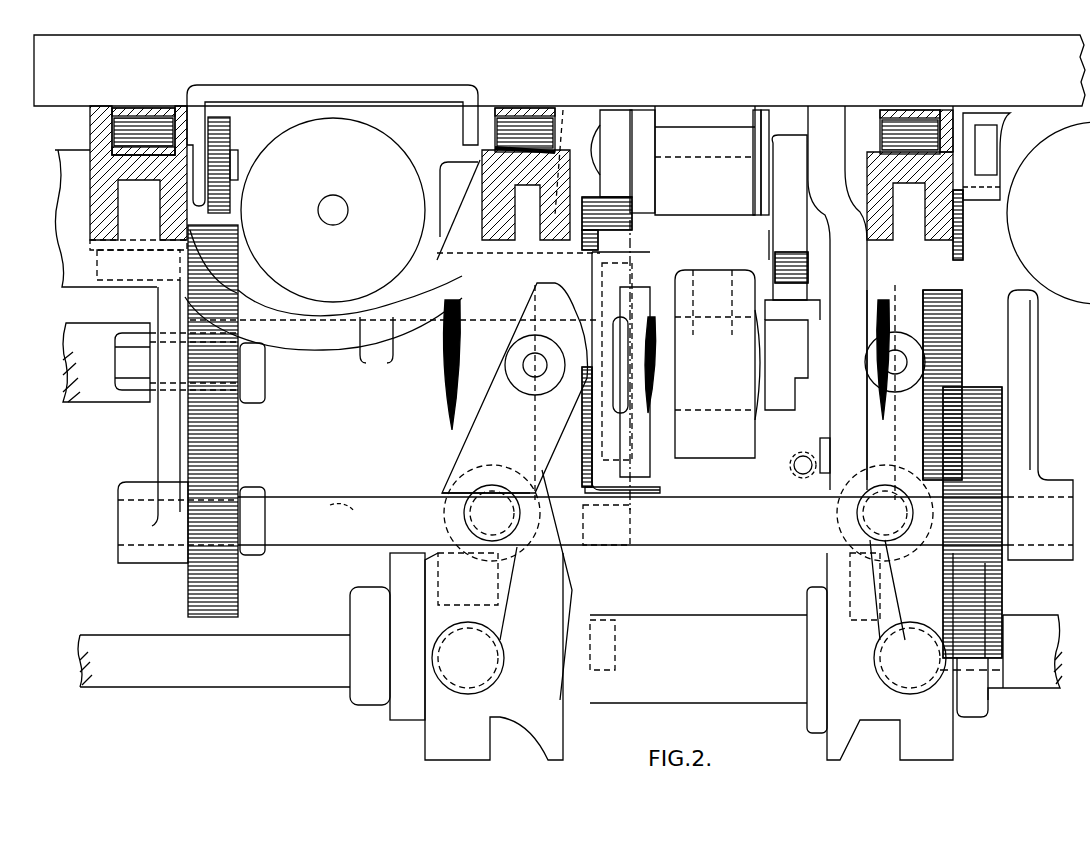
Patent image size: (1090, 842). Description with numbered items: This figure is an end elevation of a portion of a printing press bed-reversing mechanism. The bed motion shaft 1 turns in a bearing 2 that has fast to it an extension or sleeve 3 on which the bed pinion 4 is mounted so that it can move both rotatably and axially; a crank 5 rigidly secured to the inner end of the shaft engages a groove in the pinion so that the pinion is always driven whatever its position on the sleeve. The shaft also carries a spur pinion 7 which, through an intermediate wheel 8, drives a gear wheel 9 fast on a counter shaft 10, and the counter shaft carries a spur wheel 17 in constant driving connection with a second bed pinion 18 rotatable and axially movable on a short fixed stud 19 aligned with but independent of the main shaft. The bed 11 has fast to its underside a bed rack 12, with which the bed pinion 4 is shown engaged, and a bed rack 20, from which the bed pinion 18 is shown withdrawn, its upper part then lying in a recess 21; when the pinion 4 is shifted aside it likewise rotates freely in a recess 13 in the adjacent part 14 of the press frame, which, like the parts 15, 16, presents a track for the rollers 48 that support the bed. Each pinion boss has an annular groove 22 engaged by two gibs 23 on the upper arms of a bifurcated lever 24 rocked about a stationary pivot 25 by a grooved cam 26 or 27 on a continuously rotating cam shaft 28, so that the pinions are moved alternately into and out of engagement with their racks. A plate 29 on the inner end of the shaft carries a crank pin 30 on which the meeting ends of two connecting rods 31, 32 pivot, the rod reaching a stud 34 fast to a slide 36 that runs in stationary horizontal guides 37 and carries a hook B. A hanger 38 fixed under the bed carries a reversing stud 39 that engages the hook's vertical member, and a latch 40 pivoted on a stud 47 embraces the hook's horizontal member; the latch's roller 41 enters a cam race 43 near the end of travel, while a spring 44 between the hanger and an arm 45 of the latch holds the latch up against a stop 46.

The bed motion shaft 1 is at (332, 384).
The bearing 2 is at (385, 450).
The extension or sleeve 3 is at (475, 415).
The bed pinion 4 is at (640, 490).
The crank 5 is at (607, 493).
The spur pinion 7 is at (236, 250).
The intermediate wheel 8 is at (222, 412).
The gear wheel 9 is at (222, 474).
The counter shaft 10 is at (328, 532).
The bed 11 is at (60, 78).
The bed rack 12 is at (600, 190).
The recess 13 is at (556, 200).
The part of the press frame 14 is at (518, 130).
The part of the press frame 15 is at (103, 190).
The part of the press frame 16 is at (880, 200).
The spur wheel 17 is at (1006, 600).
The bed pinion 18 is at (965, 342).
The fixed shaft or stud 19 is at (985, 355).
The bed rack 20 is at (985, 195).
The recess 21 is at (940, 180).
The annular groove 22 is at (535, 326).
The gibs 23 is at (532, 366).
The bifurcated lever 24 is at (866, 438).
The stationary pivot 25 is at (505, 530).
The grooved cam 26 is at (462, 722).
The grooved cam 27 is at (855, 710).
The cam shaft 28 is at (268, 663).
The plate 29 is at (640, 150).
The crank pin 30 is at (740, 150).
The connecting rod or link 31 is at (705, 130).
The connecting rod or link 32 is at (665, 130).
The stud or pin 34 is at (690, 410).
The block or slide 36 is at (640, 367).
The stationary horizontal guides 37 is at (642, 445).
The bracket or hanger 38 is at (825, 185).
The reversing stud 39 is at (790, 415).
The yoke or latch 40 is at (795, 345).
The anti-friction roller 41 is at (790, 268).
The cam race 43 is at (780, 225).
The spring 44 is at (793, 468).
The arm 45 is at (818, 455).
The pin or stop 46 is at (835, 290).
The stud 47 is at (878, 320).
The rollers 48 is at (138, 130).
The hook B is at (772, 373).